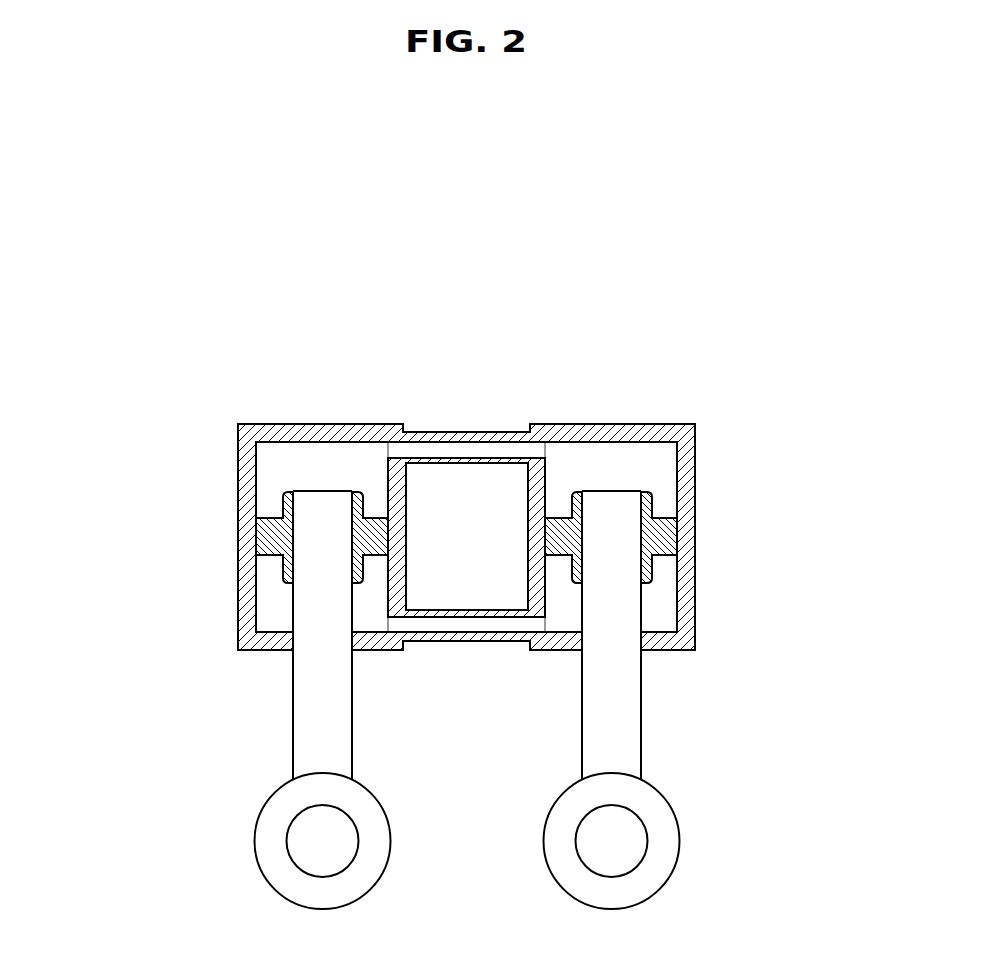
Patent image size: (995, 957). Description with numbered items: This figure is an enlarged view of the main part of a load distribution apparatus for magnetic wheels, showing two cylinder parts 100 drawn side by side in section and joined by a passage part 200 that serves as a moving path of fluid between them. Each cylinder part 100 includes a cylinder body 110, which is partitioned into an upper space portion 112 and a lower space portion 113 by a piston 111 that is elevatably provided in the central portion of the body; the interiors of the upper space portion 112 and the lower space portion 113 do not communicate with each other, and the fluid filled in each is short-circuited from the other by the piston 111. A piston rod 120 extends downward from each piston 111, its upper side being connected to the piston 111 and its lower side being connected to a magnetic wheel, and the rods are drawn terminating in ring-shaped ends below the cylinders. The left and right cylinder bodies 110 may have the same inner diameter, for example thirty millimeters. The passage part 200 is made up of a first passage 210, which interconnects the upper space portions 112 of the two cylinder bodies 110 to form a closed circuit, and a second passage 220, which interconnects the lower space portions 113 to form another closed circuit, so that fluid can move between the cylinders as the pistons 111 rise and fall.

The cylinder part 100 is at (468, 675).
The cylinder body 110 is at (467, 537).
The piston 111 is at (660, 529).
The upper space portion 112 is at (607, 478).
The lower space portion 113 is at (661, 607).
The piston rod 120 is at (625, 690).
The passage part 200 is at (507, 327).
The first passage 210 is at (432, 435).
The second passage 220 is at (490, 638).